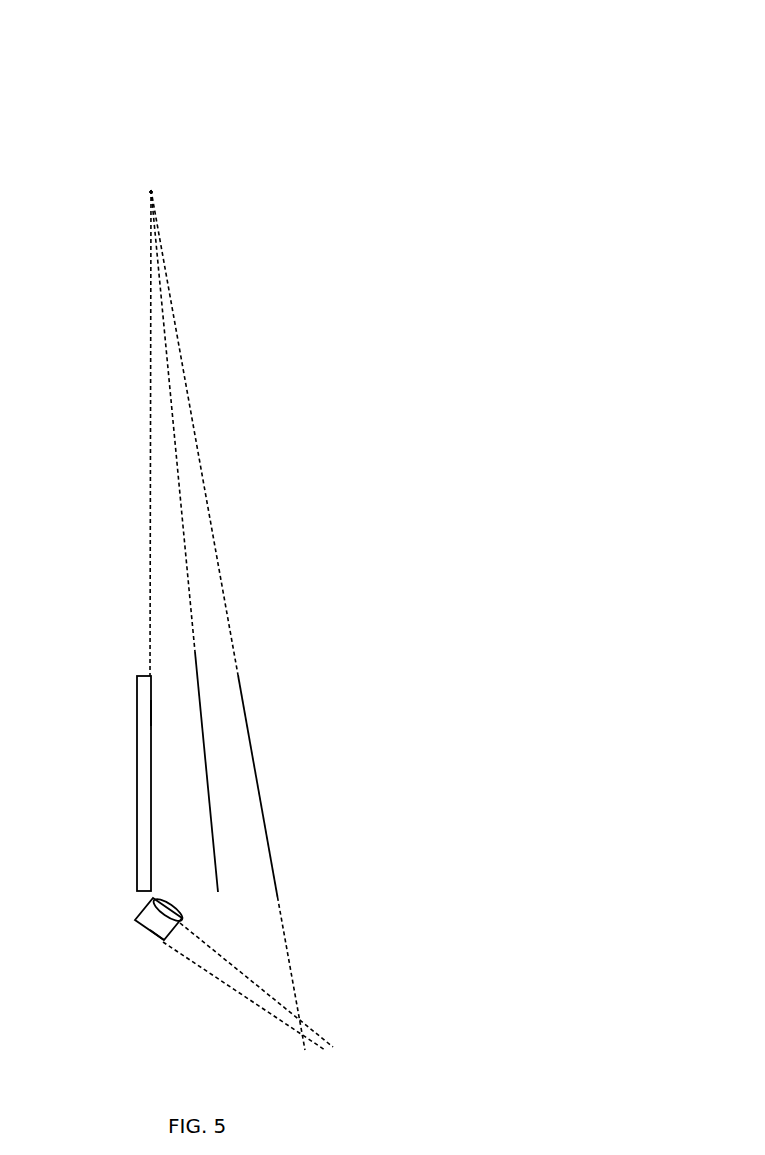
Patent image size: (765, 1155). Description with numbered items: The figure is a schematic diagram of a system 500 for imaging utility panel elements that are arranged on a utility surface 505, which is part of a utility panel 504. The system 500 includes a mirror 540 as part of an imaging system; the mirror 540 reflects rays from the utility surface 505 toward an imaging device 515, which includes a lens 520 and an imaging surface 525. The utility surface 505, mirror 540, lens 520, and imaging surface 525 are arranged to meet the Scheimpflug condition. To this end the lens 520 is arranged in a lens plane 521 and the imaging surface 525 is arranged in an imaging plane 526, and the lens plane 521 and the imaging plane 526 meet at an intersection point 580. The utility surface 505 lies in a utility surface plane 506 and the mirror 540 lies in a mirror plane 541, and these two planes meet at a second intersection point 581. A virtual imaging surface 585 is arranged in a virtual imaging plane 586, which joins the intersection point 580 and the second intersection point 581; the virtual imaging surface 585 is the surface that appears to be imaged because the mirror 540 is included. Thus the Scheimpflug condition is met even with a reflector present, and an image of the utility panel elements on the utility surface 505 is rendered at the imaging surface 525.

The system 500 is at (384, 50).
The second intersection point 581 is at (151, 190).
The utility surface plane 506 is at (150, 475).
The mirror plane 541 is at (185, 545).
The virtual imaging plane 586 is at (226, 602).
The mirror 540 is at (203, 728).
The virtual imaging surface 585 is at (258, 785).
The utility panel 504 is at (137, 770).
The utility surface 505 is at (150, 713).
The imaging device 515 is at (143, 910).
The lens 520 is at (160, 901).
The imaging surface 525 is at (158, 935).
The lens plane 521 is at (222, 957).
The imaging plane 526 is at (226, 984).
The intersection point 580 is at (303, 1027).